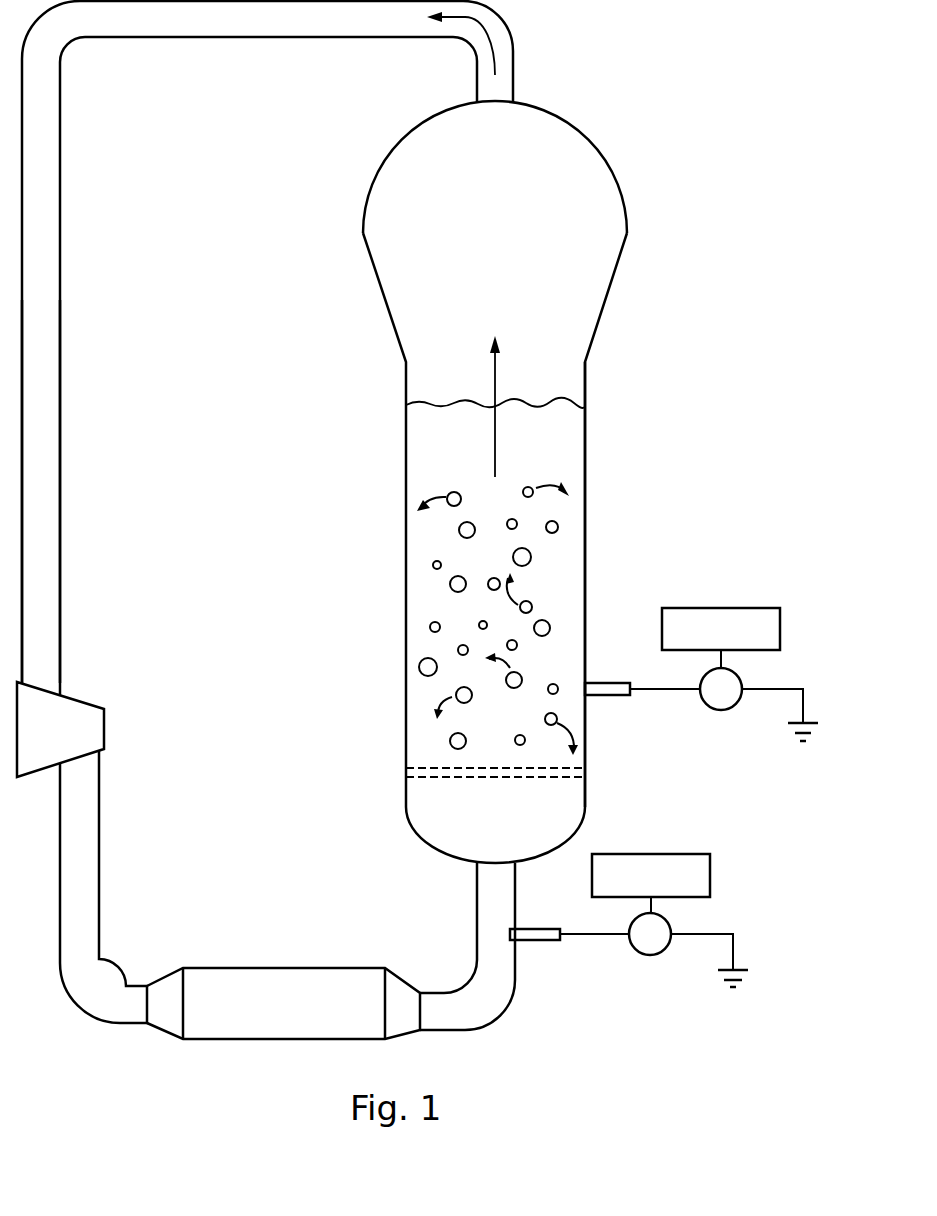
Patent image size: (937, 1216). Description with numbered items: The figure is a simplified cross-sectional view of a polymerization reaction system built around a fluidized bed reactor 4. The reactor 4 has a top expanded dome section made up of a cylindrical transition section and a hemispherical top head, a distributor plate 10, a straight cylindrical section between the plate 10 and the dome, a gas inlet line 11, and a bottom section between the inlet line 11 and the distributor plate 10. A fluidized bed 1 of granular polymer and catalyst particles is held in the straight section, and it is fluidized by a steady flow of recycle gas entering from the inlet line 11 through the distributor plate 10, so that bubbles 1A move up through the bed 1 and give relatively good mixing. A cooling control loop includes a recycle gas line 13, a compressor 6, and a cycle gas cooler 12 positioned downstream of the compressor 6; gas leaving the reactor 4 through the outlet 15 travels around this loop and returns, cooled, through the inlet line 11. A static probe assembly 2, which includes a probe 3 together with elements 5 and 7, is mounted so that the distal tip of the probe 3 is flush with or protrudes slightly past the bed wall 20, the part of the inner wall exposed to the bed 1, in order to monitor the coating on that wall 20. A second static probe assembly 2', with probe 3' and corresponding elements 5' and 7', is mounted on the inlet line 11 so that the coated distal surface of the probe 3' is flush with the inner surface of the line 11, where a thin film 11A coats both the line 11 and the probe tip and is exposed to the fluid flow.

The fluidized bed 1 is at (427, 453).
The bubbles 1A is at (430, 627).
The static probe assembly 2 is at (709, 651).
The static probe assembly 2' is at (664, 896).
The probe 3 is at (611, 667).
The probe 3' is at (544, 911).
The fluidized bed reactor 4 is at (612, 534).
The element of probe assembly 5 is at (727, 599).
The element of probe assembly 5' is at (661, 845).
The compressor 6 is at (84, 702).
The element of probe assembly 7 is at (733, 711).
The element of probe assembly 7' is at (666, 956).
The distributor plate 10 is at (447, 767).
The gas inlet line 11 is at (479, 951).
The thin film 11A is at (475, 956).
The cycle gas cooler 12 is at (265, 967).
The recycle gas line 13 is at (62, 197).
The outlet 15 is at (502, 101).
The bed wall 20 is at (587, 456).